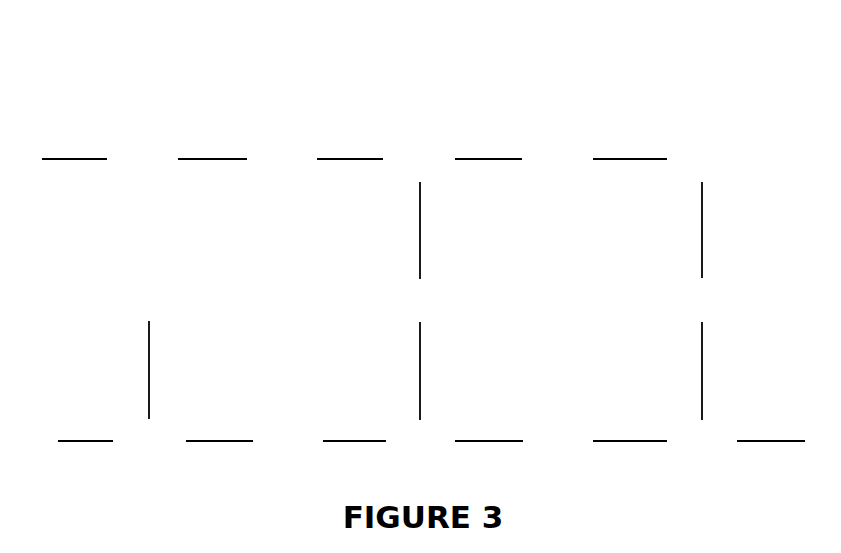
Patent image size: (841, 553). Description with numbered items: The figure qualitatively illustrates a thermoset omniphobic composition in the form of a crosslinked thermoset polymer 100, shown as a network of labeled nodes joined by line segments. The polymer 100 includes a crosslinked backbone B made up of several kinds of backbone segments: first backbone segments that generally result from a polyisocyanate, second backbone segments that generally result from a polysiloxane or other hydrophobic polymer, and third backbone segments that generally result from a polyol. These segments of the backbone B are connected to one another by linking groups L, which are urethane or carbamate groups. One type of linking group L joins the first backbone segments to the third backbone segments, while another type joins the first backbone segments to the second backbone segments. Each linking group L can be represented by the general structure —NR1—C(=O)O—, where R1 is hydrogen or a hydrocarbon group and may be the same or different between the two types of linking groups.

The crosslinked thermoset polymer 100 is at (404, 85).
The crosslinked backbone B is at (633, 128).
The linking groups L is at (485, 280).